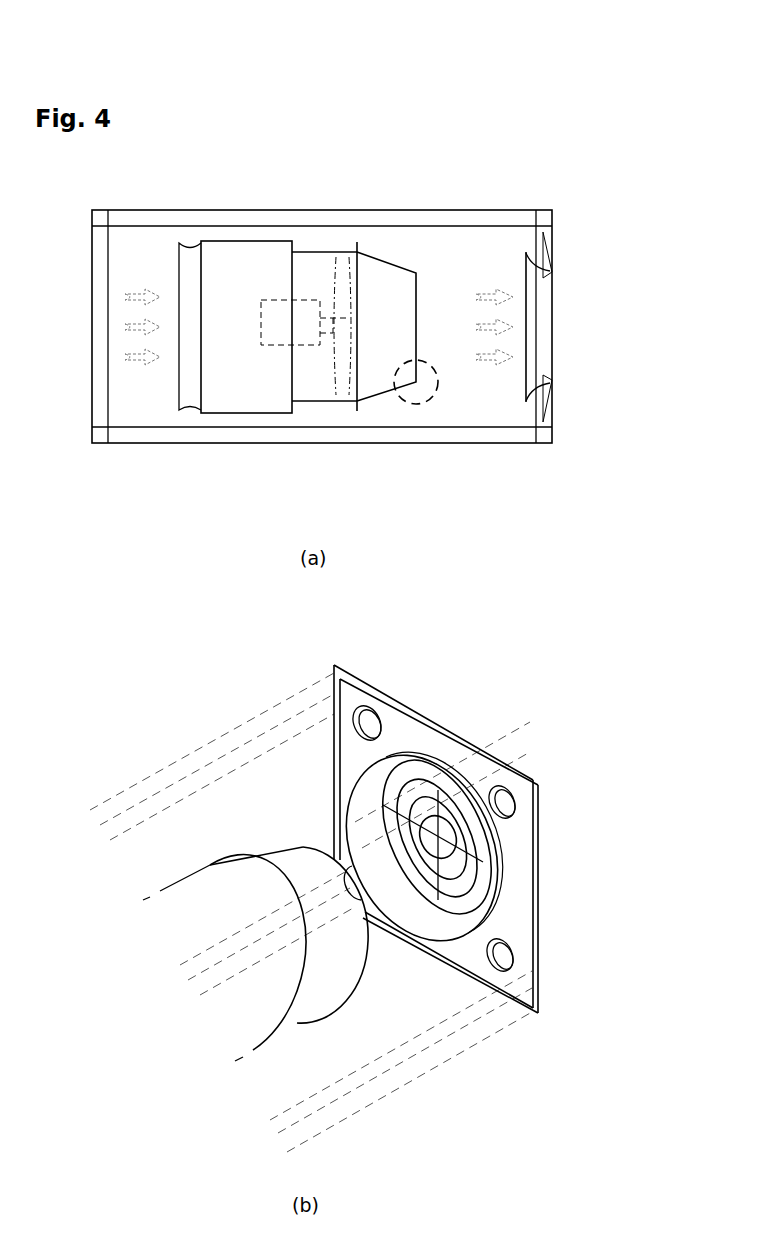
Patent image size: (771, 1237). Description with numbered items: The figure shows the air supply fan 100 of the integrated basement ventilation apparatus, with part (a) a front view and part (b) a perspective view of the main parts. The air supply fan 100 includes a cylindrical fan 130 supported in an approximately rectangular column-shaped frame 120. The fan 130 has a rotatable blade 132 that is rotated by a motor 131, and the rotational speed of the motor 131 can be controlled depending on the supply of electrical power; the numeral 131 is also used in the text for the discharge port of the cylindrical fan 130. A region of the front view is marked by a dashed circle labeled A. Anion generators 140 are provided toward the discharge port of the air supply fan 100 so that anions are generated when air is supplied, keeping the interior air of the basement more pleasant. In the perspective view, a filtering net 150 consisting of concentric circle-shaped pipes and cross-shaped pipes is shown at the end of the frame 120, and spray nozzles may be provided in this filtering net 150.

The air supply fan 100 is at (277, 174).
The frame 120 is at (469, 432).
The cylindrical fan 130 is at (221, 398).
The motor 131 is at (307, 308).
The rotatable blade 132 is at (345, 397).
The detail region A is at (416, 404).
The anion generator 140 is at (560, 256).
The filtering net 150 is at (485, 892).